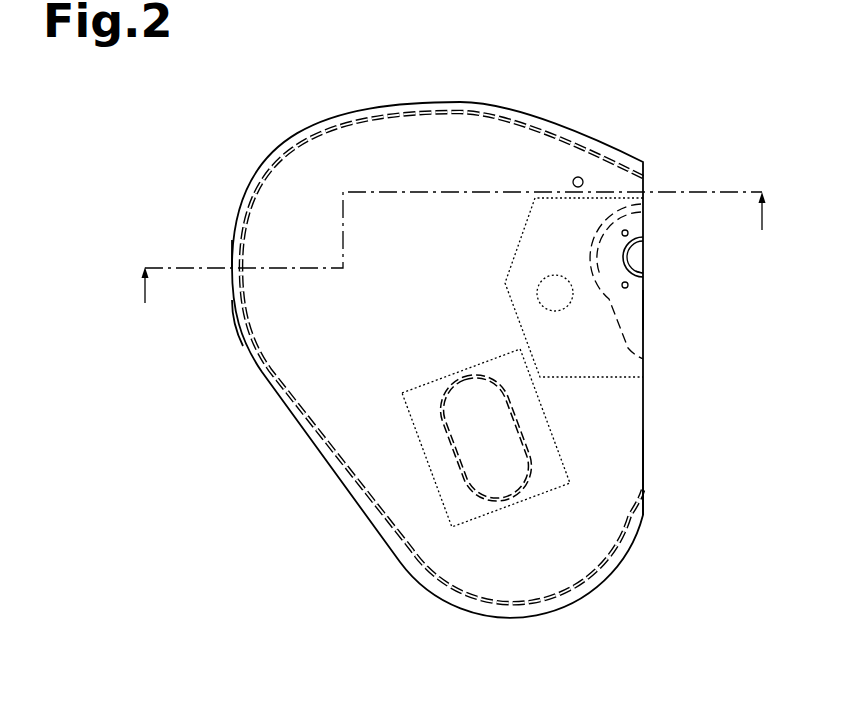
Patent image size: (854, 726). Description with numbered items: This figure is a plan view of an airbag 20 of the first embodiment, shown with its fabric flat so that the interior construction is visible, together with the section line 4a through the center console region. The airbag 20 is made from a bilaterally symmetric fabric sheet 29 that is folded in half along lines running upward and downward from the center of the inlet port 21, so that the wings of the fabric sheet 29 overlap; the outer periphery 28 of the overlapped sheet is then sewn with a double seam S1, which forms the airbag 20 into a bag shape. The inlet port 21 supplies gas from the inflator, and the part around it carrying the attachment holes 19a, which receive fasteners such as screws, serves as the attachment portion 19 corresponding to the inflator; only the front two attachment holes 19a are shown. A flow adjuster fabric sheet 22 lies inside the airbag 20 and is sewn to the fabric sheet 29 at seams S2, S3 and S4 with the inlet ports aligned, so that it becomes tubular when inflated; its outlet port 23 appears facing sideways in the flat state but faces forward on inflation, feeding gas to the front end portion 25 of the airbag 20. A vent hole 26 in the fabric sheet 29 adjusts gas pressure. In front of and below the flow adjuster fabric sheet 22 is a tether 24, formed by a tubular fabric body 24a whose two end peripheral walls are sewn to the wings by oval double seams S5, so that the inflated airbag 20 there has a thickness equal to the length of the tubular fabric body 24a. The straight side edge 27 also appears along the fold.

The airbag 20 is at (266, 158).
The outer periphery 28 is at (235, 214).
The front end portion 25 is at (226, 320).
The straight edge portion 27 is at (646, 462).
The vent hole 26 is at (578, 177).
The fabric sheet 29 is at (368, 260).
The flow adjuster fabric sheet 22 is at (512, 236).
The outlet port 23 is at (554, 275).
The attachment portion 19 is at (616, 256).
The attachment hole 19a is at (628, 232).
The inlet port 21 is at (640, 272).
The tether 24 is at (404, 405).
The tubular fabric body 24a is at (556, 440).
The double seam S1 is at (378, 121).
The seam S2 is at (628, 349).
The seam S3 is at (643, 310).
The seam S4 is at (634, 237).
The oval double seam S5 is at (452, 374).
The center console 4a is at (452, 265).